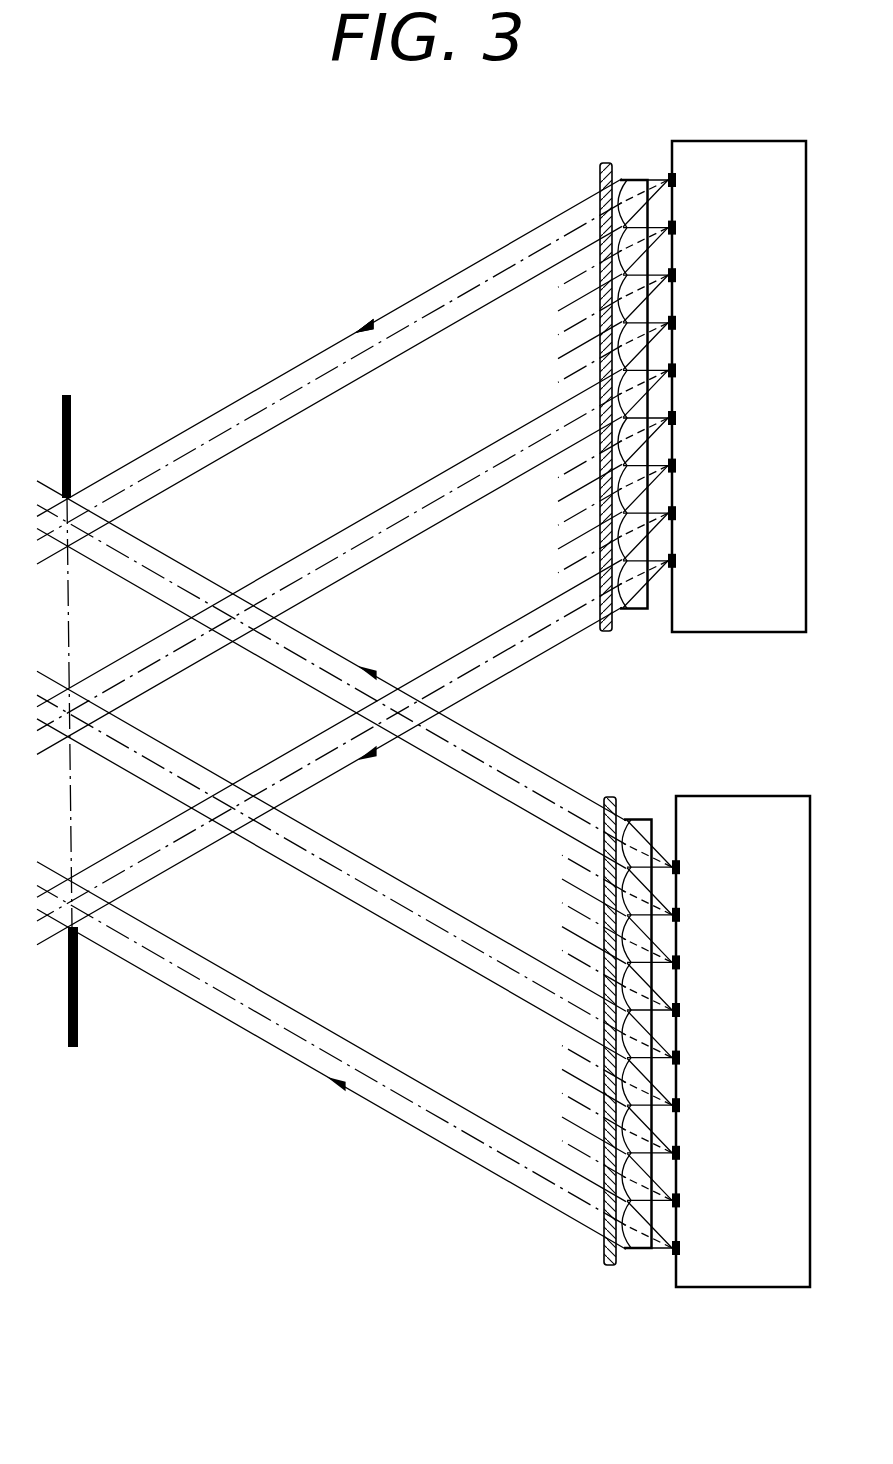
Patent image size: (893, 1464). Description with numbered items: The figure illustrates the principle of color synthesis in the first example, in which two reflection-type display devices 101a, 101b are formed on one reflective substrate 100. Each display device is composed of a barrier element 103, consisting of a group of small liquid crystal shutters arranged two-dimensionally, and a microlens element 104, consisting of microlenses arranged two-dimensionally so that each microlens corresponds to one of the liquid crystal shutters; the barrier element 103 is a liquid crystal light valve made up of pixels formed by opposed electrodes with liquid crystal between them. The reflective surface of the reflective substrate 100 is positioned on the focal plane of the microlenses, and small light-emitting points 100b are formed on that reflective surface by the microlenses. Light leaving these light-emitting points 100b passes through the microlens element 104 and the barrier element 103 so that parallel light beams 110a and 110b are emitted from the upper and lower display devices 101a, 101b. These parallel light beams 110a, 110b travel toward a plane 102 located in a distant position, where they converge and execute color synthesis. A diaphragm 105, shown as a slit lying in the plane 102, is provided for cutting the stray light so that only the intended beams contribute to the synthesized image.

The reflective substrate 100 is at (777, 624).
The small light-emitting points 100b is at (680, 1248).
The reflective display device 101a is at (571, 622).
The reflective display device 101b is at (563, 787).
The plane 102 is at (70, 797).
The barrier element 103 is at (608, 164).
The microlens element 104 is at (643, 609).
The diaphragm 105 is at (78, 1018).
The parallel light beam 110a is at (250, 393).
The parallel light beam 110b is at (222, 1010).